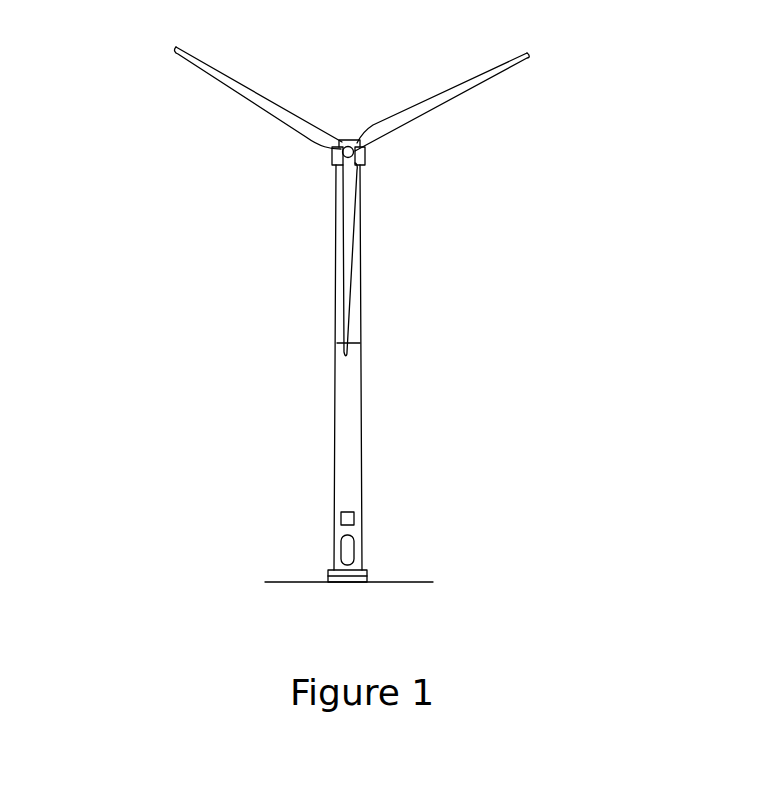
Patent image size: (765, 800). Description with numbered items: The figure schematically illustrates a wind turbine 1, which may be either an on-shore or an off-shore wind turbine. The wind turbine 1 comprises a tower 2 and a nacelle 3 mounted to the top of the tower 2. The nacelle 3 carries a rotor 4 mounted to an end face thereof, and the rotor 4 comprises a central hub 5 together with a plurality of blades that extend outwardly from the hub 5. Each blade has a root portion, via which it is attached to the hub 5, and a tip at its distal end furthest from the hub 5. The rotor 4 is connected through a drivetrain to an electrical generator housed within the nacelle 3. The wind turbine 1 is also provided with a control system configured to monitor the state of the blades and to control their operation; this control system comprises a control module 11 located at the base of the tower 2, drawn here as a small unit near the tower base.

The wind turbine 1 is at (205, 246).
The tower 2 is at (363, 438).
The nacelle 3 is at (367, 161).
The rotor 4 is at (310, 88).
The central hub 5 is at (350, 141).
The control module 11 is at (356, 522).